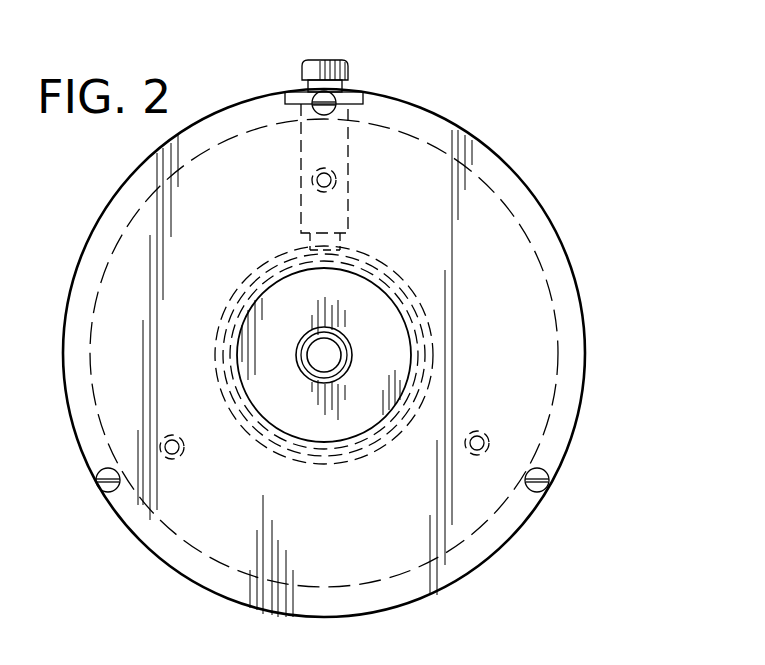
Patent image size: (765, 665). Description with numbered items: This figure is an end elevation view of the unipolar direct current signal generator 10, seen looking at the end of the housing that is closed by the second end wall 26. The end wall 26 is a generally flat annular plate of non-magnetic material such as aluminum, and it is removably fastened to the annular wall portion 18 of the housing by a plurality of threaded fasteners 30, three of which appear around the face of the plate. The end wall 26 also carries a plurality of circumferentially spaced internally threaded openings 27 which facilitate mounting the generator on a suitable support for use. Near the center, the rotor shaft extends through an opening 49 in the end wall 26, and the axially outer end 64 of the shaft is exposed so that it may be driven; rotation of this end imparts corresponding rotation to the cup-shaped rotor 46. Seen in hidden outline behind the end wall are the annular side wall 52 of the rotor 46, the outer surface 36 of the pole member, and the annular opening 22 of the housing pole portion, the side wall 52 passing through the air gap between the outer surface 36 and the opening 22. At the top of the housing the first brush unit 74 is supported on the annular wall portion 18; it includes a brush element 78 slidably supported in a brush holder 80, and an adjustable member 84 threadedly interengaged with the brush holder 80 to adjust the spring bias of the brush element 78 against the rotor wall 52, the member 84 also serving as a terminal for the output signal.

The unipolar direct current signal generator 10 is at (262, 86).
The annular wall portion 18 is at (531, 223).
The annular opening 22 is at (212, 353).
The second end wall 26 is at (522, 283).
The internally threaded openings 27 is at (337, 181).
The threaded fasteners 30 is at (337, 108).
The outer surface 36 is at (404, 316).
The cup-shaped rotor 46 is at (398, 262).
The opening 49 is at (344, 374).
The annular side wall 52 is at (407, 291).
The axially outer end 64 is at (328, 348).
The first brush unit 74 is at (350, 50).
The brush element 78 is at (342, 244).
The brush holder 80 is at (301, 166).
The adjustable member 84 is at (350, 68).